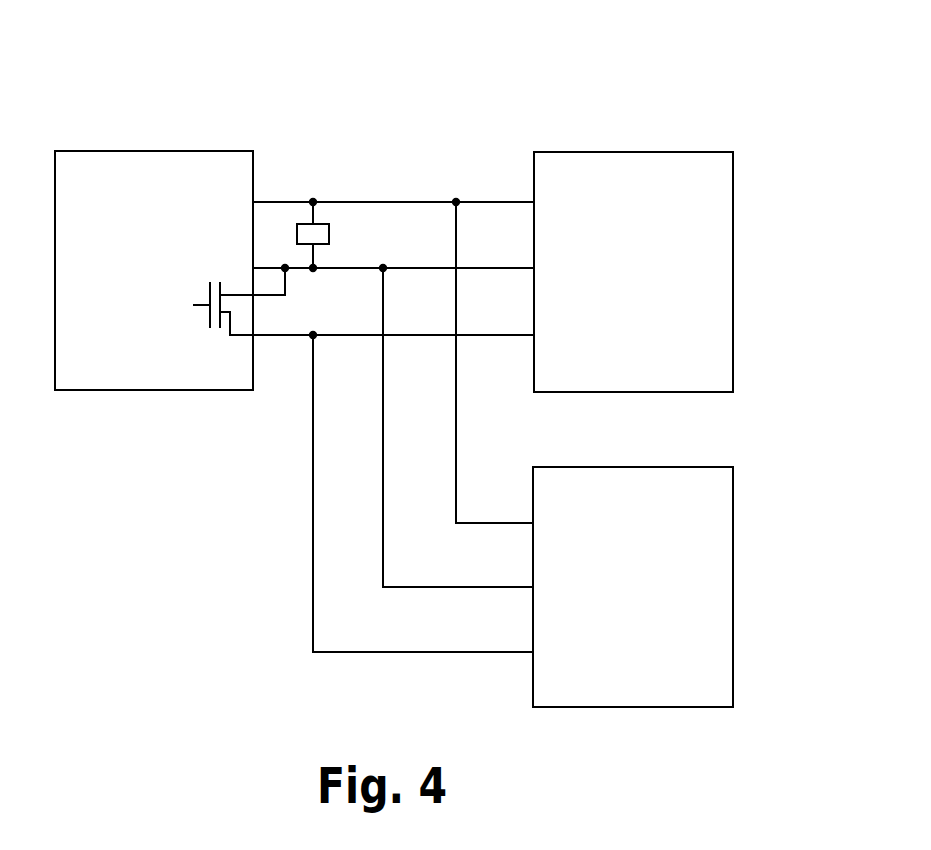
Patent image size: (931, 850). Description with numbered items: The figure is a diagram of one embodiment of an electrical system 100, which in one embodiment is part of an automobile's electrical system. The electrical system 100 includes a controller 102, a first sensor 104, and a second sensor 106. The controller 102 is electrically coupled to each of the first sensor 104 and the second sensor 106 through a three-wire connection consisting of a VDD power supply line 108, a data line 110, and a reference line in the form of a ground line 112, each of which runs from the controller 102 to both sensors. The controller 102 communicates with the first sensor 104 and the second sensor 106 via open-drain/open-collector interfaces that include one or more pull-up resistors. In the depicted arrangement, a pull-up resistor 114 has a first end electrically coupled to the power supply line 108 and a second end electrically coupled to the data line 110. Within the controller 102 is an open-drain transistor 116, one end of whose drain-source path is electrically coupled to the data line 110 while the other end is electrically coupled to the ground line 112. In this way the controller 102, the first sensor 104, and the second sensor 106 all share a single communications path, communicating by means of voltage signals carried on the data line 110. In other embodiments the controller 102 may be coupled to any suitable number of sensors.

The electrical system 100 is at (522, 92).
The controller 102 is at (140, 151).
The first sensor 104 is at (663, 152).
The second sensor 106 is at (657, 467).
The VDD power supply line 108 is at (487, 201).
The data line 110 is at (463, 268).
The ground line 112 is at (463, 335).
The pull-up resistor 114 is at (331, 232).
The open-drain transistor 116 is at (207, 313).